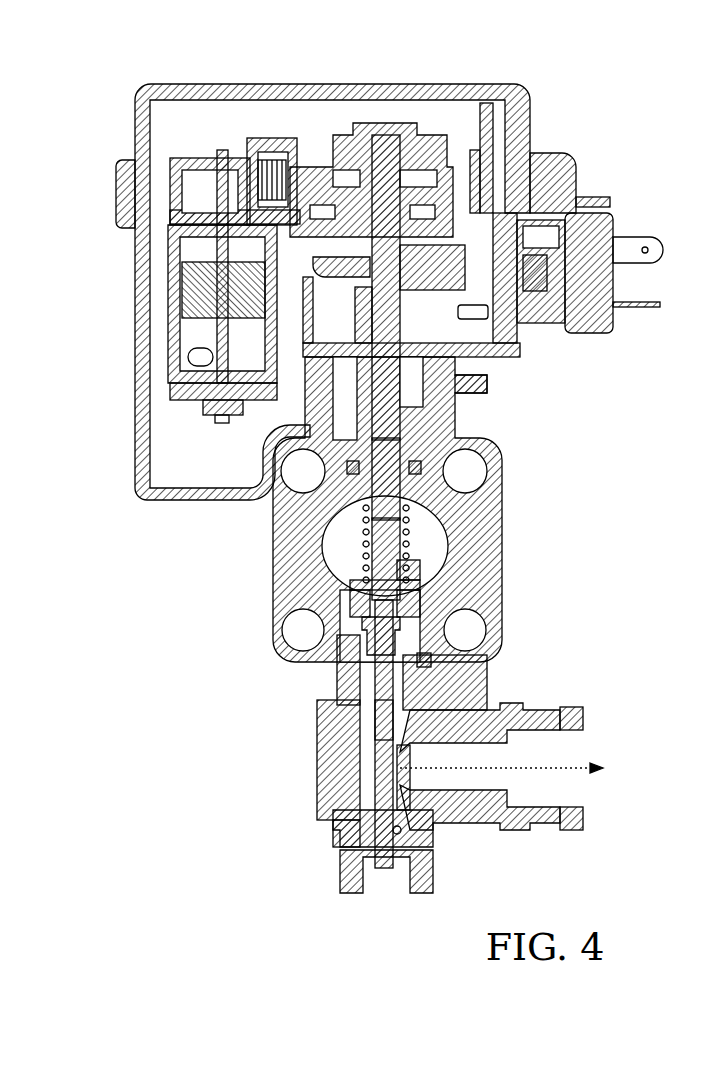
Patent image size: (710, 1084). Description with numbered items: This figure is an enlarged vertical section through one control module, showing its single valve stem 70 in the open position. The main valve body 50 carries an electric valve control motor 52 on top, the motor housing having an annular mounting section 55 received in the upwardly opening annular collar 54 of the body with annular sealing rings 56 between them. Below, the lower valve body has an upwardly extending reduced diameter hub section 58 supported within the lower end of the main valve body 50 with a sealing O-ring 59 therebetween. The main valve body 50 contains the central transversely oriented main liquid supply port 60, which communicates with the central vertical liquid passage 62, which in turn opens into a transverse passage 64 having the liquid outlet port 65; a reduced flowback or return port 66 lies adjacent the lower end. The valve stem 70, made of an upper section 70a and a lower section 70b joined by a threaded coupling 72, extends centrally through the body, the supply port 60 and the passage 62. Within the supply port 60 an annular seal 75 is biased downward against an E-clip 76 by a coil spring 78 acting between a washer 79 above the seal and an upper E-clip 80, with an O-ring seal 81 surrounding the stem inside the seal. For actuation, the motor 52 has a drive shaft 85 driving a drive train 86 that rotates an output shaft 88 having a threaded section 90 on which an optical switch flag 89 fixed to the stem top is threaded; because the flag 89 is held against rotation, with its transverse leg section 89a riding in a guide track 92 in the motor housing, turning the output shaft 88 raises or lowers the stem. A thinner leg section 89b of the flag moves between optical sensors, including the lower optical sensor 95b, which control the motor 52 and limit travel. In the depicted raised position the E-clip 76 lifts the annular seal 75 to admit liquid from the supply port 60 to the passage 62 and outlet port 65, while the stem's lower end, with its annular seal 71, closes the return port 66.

The drive shaft 85 is at (235, 168).
The drive train 86 is at (291, 160).
The output shaft 88 is at (388, 224).
The threaded section 90 is at (400, 263).
The optical switch flag 89 is at (452, 268).
The thinner leg section 89b is at (572, 280).
The electric valve control motor 52 is at (180, 283).
The transverse leg section 89a is at (330, 275).
The optical sensor 95b is at (480, 310).
The annular mounting section 55 is at (395, 386).
The annular collar 54 is at (466, 420).
The annular sealing rings 56 is at (420, 466).
The guide track 92 is at (327, 327).
The upper section 70a is at (366, 490).
The upper E-clip 80 is at (425, 527).
The main valve body 50 is at (500, 542).
The main liquid supply port 60 is at (347, 524).
The coil spring 78 is at (370, 552).
The washer 79 is at (410, 585).
The O-ring seal 81 is at (370, 597).
The annular seal 75 is at (427, 602).
The E-clip 76 is at (370, 627).
The sealing O-ring 59 is at (427, 652).
The threaded coupling 72 is at (370, 660).
The reduced diameter hub section 58 is at (427, 667).
The valve stem 70 is at (370, 700).
The transverse passage 64 is at (495, 750).
The liquid outlet port 65 is at (572, 740).
The central vertical liquid passage 62 is at (368, 795).
The lower section 70b is at (378, 720).
The flowback or return port 66 is at (375, 835).
The annular seal 71 is at (401, 831).